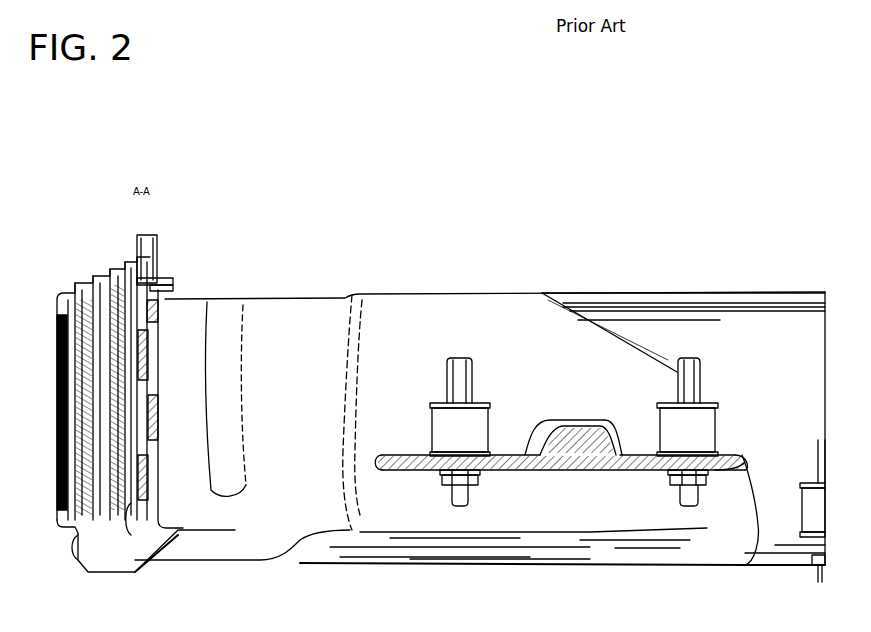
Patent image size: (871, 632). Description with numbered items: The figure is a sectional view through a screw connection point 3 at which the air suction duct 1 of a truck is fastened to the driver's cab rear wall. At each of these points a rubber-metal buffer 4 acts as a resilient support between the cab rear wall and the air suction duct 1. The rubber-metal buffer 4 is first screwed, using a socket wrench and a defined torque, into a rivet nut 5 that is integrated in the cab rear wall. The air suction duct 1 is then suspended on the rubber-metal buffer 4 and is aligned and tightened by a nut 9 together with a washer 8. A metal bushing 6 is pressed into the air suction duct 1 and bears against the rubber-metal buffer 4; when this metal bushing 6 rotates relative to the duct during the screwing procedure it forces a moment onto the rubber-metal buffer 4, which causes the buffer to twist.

The air suction duct 1 is at (406, 455).
The screw connection point 3 is at (460, 333).
The rubber-metal buffer 4 is at (705, 435).
The rivet nut 5 is at (697, 358).
The metal bushing 6 is at (720, 458).
The washer 8 is at (692, 466).
The nut 9 is at (720, 476).